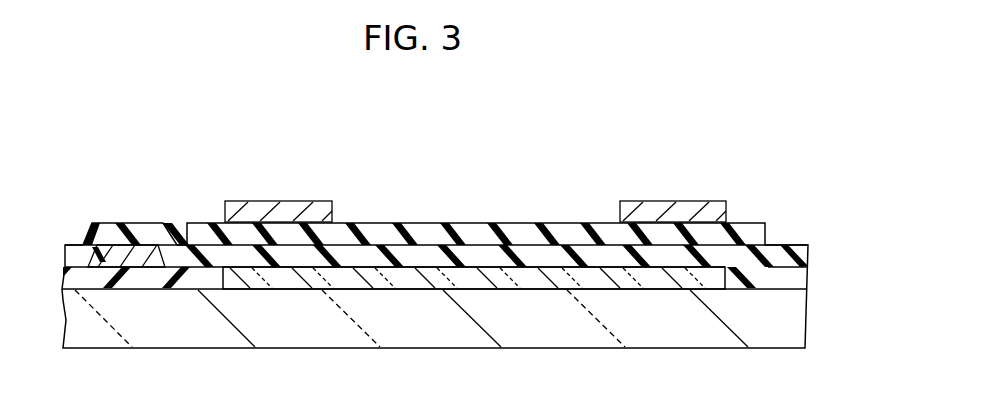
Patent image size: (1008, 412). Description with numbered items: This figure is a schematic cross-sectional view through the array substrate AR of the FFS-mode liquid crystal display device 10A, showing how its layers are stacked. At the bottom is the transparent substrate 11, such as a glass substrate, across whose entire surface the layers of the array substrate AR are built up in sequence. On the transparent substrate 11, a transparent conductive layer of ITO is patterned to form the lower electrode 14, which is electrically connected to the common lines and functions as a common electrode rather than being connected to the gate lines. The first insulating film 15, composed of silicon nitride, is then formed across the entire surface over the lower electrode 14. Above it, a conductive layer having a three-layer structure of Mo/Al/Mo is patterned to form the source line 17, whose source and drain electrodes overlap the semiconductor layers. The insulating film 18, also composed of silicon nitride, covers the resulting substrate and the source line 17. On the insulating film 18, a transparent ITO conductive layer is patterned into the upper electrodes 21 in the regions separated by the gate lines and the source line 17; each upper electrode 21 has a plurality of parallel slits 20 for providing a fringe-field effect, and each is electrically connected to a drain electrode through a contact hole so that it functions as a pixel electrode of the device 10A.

The FFS-mode liquid crystal display device 10A is at (327, 111).
The transparent substrate 11 is at (298, 335).
The lower electrode 14 is at (395, 284).
The first insulating film 15 is at (752, 282).
The source line 17 is at (125, 262).
The insulating film 18 is at (528, 232).
The slit 20 is at (455, 204).
The upper electrode 21 is at (290, 211).
The array substrate AR is at (828, 350).